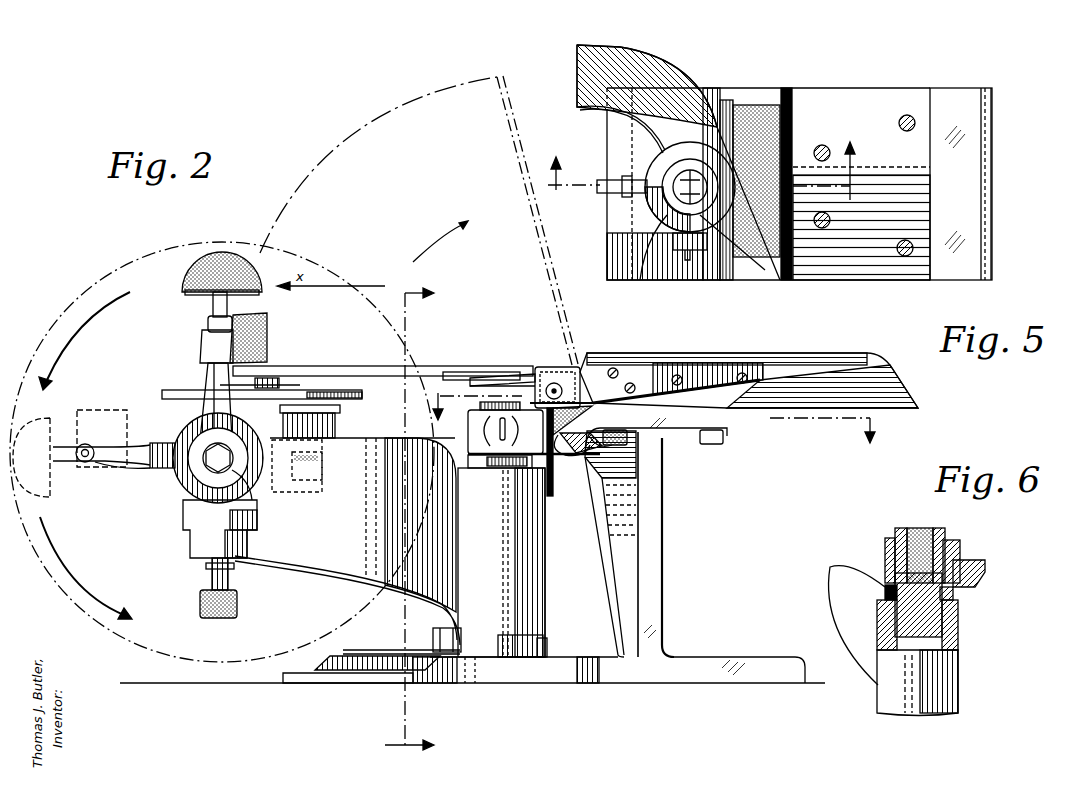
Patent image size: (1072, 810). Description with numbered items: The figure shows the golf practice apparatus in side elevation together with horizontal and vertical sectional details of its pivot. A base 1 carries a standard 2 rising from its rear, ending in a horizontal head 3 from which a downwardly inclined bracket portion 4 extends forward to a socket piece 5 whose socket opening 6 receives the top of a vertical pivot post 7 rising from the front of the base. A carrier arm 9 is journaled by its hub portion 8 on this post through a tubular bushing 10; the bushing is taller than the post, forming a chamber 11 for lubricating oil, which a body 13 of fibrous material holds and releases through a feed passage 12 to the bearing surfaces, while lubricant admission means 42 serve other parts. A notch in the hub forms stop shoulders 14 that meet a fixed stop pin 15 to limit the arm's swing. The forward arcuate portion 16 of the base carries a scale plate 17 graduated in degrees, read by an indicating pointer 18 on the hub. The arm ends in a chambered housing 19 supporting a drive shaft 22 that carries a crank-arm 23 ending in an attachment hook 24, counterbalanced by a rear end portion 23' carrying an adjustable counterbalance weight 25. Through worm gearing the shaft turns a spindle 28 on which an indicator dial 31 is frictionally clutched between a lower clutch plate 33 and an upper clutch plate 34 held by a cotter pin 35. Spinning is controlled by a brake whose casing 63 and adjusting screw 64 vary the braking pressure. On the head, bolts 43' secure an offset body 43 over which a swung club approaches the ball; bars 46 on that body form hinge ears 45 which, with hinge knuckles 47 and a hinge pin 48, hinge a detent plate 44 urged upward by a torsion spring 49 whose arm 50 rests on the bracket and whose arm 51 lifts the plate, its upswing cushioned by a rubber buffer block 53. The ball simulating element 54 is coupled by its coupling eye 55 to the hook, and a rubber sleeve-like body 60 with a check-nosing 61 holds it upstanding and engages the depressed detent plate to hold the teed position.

In FIG. 2, the base 1 is at (706, 657).
In FIG. 5, the base 1 is at (985, 245).
In FIG. 2, the standard 2 is at (660, 556).
In FIG. 2, the head 3 is at (677, 448).
In FIG. 5, the head 3 is at (850, 270).
In FIG. 2, the bracket portion 4 is at (582, 462).
In FIG. 5, the bracket portion 4 is at (758, 265).
In FIG. 6, the bracket portion 4 is at (975, 570).
In FIG. 2, the socket piece 5 is at (485, 483).
In FIG. 5, the socket piece 5 is at (648, 205).
In FIG. 6, the socket piece 5 is at (885, 547).
In FIG. 5, the socket opening 6 is at (707, 169).
In FIG. 6, the socket opening 6 is at (896, 556).
In FIG. 6, the pivot post 7 is at (880, 618).
In FIG. 2, the hub portion 8 is at (544, 558).
In FIG. 6, the hub portion 8 is at (948, 656).
In FIG. 2, the carrier arm 9 is at (297, 553).
In FIG. 5, the carrier arm 9 is at (625, 55).
In FIG. 6, the carrier arm 9 is at (832, 590).
In FIG. 5, the tubular bushing 10 is at (660, 235).
In FIG. 6, the tubular bushing 10 is at (946, 536).
In FIG. 5, the chamber 11 is at (660, 213).
In FIG. 6, the chamber 11 is at (910, 530).
In FIG. 5, the lubricating oil feed passage 12 is at (622, 178).
In FIG. 6, the lubricating oil feed passage 12 is at (958, 592).
In FIG. 6, the body of saturatable fibrous material 13 is at (925, 530).
In FIG. 2, the stop shoulders 14 is at (500, 658).
In FIG. 2, the stop pin 15 is at (548, 646).
In FIG. 2, the arcuate portion 16 is at (330, 683).
In FIG. 2, the scale plate 17 is at (368, 670).
In FIG. 2, the indicating pointer 18 is at (375, 650).
In FIG. 2, the chambered housing 19 is at (336, 425).
In FIG. 2, the drive shaft 22 is at (190, 485).
In FIG. 2, the crank-arm 23 is at (195, 401).
In FIG. 2, the rear end portion of the crank-arm 23' is at (266, 492).
In FIG. 2, the attachment hook 24 is at (210, 322).
In FIG. 2, the counterbalance weight 25 is at (195, 530).
In FIG. 2, the spindle 28 is at (280, 384).
In FIG. 2, the indicator dial 31 is at (174, 392).
In FIG. 2, the lower clutch plate 33 is at (342, 409).
In FIG. 2, the upper clutch plate 34 is at (330, 392).
In FIG. 2, the cotter pin 35 is at (220, 386).
In FIG. 2, the lubricant admission means 42 is at (150, 465).
In FIG. 2, the offset body 43 is at (749, 369).
In FIG. 2, the bolts 43' is at (652, 469).
In FIG. 5, the bolts 43' is at (860, 210).
In FIG. 2, the detent plate 44 is at (360, 366).
In FIG. 2, the hinge ears 45 is at (540, 367).
In FIG. 2, the bars 46 is at (672, 365).
In FIG. 2, the hinge knuckles 47 is at (528, 388).
In FIG. 2, the hinge pin 48 is at (560, 386).
In FIG. 2, the torsion spring 49 is at (525, 374).
In FIG. 2, the spring arm 50 is at (552, 496).
In FIG. 5, the spring arm 50 is at (725, 258).
In FIG. 2, the spring arm 51 is at (470, 372).
In FIG. 2, the buffer block 53 is at (563, 457).
In FIG. 5, the buffer block 53 is at (745, 105).
In FIG. 2, the ball simulating element 54 is at (221, 252).
In FIG. 2, the coupling eye 55 is at (227, 302).
In FIG. 2, the sleeve-like body 60 is at (202, 348).
In FIG. 2, the check-nosing 61 is at (268, 356).
In FIG. 2, the casing 63 is at (232, 576).
In FIG. 2, the adjusting screw 64 is at (207, 575).